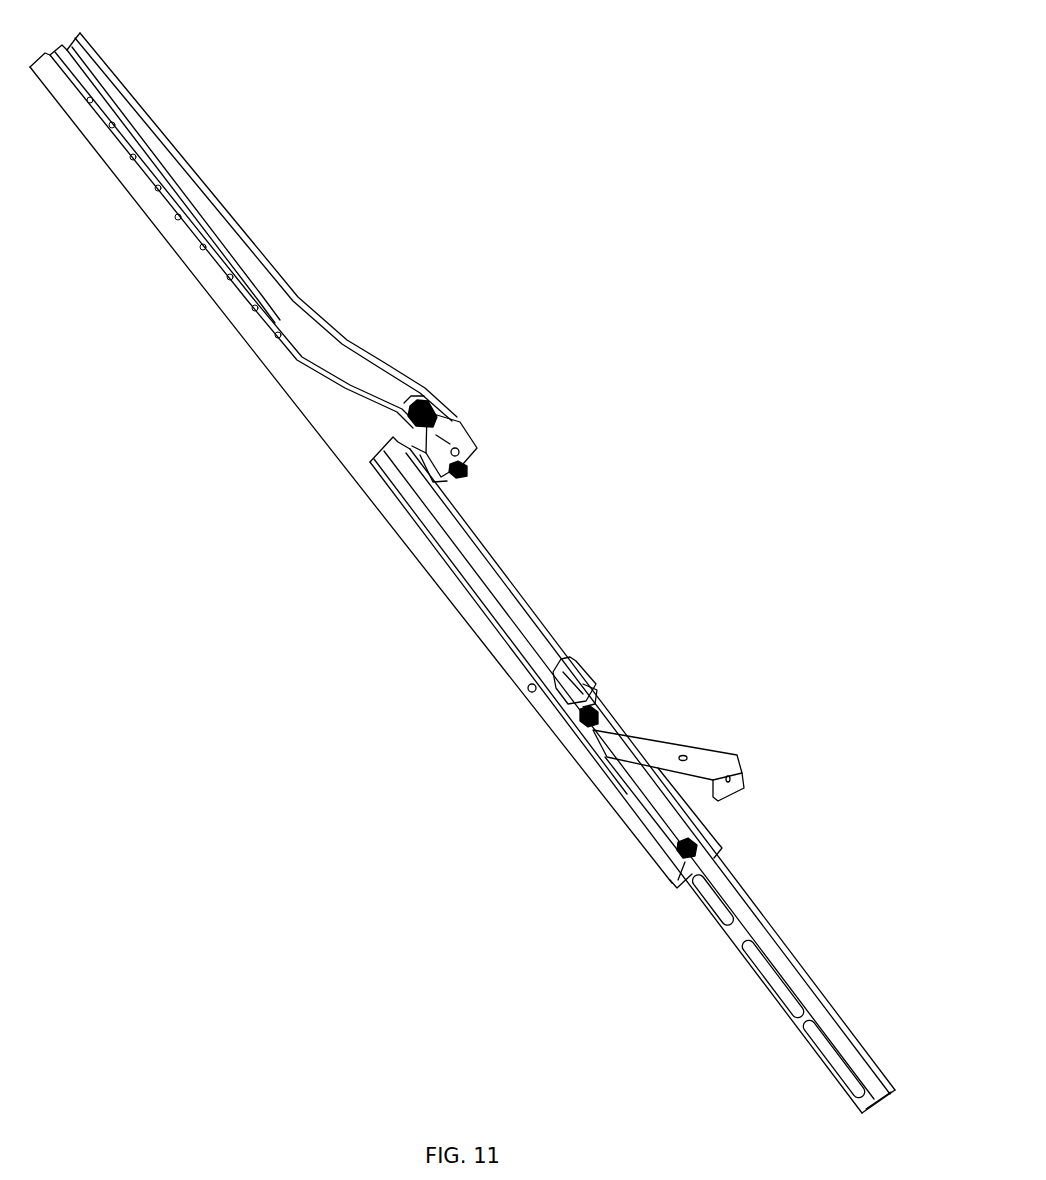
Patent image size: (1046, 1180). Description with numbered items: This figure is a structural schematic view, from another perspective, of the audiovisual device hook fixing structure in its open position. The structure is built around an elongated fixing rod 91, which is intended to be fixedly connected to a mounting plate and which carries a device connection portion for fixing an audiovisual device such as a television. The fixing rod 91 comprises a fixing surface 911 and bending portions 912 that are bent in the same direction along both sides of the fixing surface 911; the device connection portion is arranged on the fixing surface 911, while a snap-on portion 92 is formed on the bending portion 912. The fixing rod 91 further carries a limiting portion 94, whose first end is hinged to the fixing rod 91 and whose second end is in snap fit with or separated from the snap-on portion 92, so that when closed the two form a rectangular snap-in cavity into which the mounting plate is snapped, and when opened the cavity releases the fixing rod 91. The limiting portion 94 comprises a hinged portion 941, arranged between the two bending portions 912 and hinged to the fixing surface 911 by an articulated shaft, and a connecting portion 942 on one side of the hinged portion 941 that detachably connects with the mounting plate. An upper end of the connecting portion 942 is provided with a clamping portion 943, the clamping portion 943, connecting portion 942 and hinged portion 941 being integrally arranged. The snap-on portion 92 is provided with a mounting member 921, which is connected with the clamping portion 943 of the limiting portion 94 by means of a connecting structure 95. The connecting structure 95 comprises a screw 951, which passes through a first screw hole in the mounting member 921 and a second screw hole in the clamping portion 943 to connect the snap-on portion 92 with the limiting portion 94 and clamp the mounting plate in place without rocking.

The fixing rod 91 is at (361, 444).
The fixing surface 911 is at (255, 240).
The bending portions 912 is at (266, 227).
The snap-on portion 92 is at (560, 775).
The mounting member 921 is at (510, 411).
The limiting portion 94 is at (718, 695).
The hinged portion 941 is at (638, 608).
The connecting portion 942 is at (668, 645).
The clamping portion 943 is at (738, 731).
The connecting structure 95 is at (469, 357).
The screw 951 is at (542, 436).